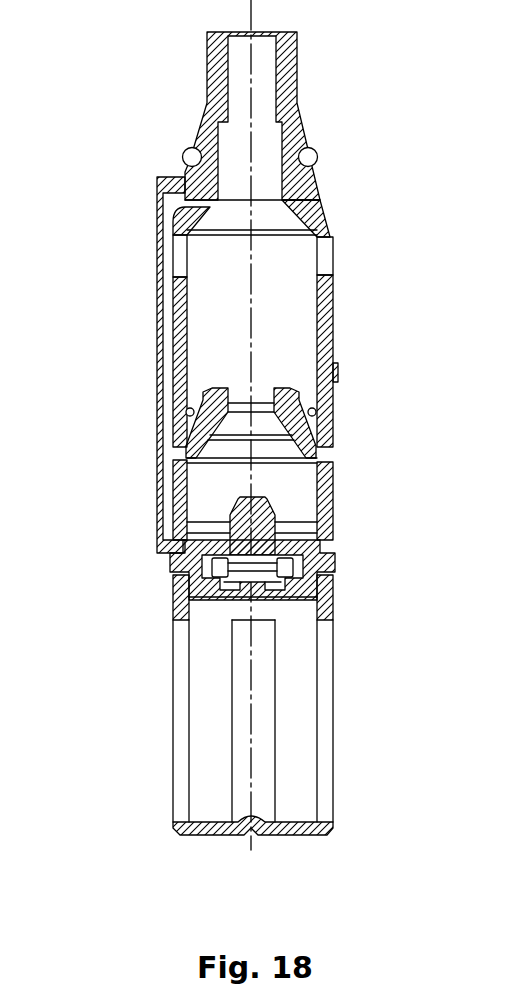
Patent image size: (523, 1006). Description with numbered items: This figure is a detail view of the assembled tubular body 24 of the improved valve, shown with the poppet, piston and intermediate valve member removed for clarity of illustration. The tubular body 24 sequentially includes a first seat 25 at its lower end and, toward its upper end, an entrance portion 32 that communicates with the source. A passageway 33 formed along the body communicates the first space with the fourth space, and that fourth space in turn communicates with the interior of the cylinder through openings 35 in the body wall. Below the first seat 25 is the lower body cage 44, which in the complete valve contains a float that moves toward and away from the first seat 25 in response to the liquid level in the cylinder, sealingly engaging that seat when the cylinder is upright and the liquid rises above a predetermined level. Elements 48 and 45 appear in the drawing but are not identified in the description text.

The entrance portion 32 is at (268, 77).
The passageway 33 is at (156, 343).
The openings 35 is at (160, 269).
The tubular body 24 is at (344, 348).
The valve seat 48 is at (329, 410).
The piston cap 45 is at (346, 561).
The first seat 25 is at (190, 618).
The lower body cage 44 is at (349, 706).